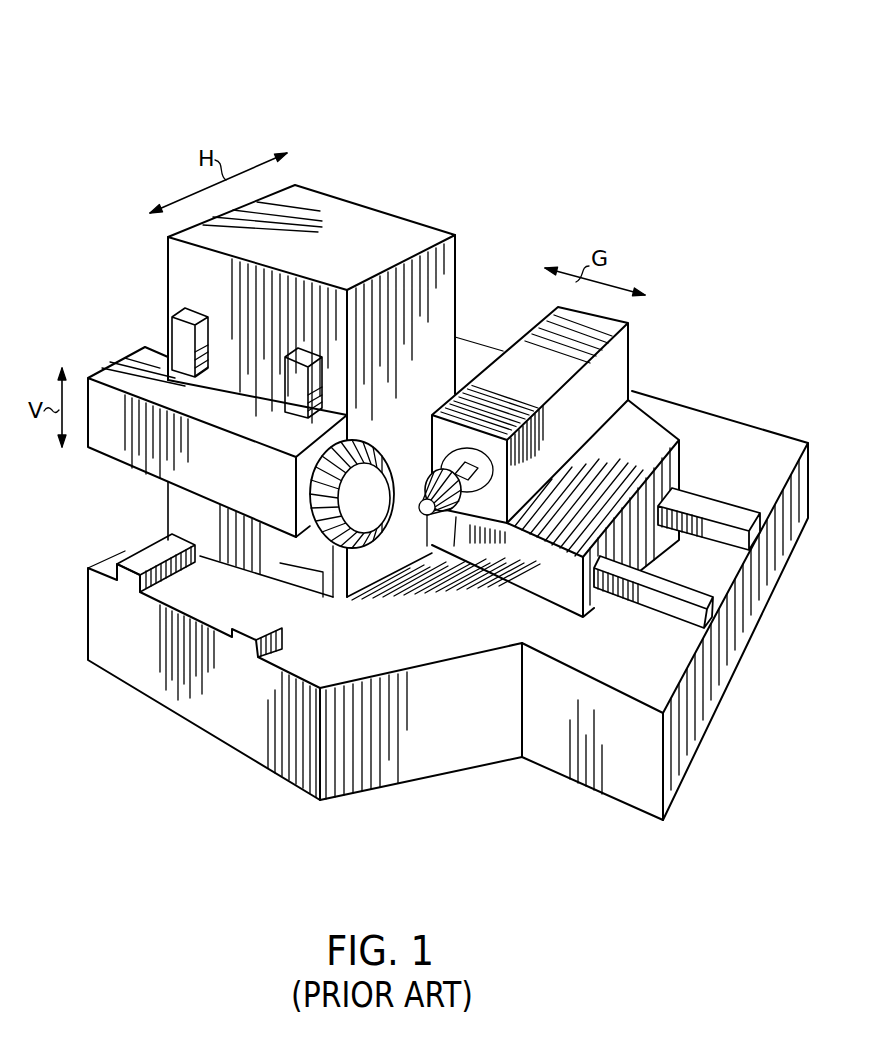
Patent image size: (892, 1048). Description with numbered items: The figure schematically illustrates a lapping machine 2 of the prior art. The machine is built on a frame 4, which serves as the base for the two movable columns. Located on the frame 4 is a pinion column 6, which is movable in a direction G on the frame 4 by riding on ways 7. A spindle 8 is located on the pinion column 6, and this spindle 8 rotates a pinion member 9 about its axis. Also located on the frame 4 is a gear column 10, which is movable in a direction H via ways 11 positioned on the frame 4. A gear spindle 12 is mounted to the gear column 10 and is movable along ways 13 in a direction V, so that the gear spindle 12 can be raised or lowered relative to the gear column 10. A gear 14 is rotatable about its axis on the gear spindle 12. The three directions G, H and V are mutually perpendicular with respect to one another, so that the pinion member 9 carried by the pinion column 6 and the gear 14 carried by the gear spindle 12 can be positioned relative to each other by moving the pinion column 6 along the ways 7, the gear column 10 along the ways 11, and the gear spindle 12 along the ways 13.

The lapping machine 2 is at (622, 98).
The frame 4 is at (402, 757).
The pinion column 6 is at (622, 432).
The ways 7 is at (730, 513).
The spindle 8 is at (522, 337).
The pinion member 9 is at (452, 518).
The gear column 10 is at (340, 217).
The ways 11 is at (143, 552).
The gear spindle 12 is at (112, 453).
The ways 13 is at (182, 343).
The gear 14 is at (333, 598).